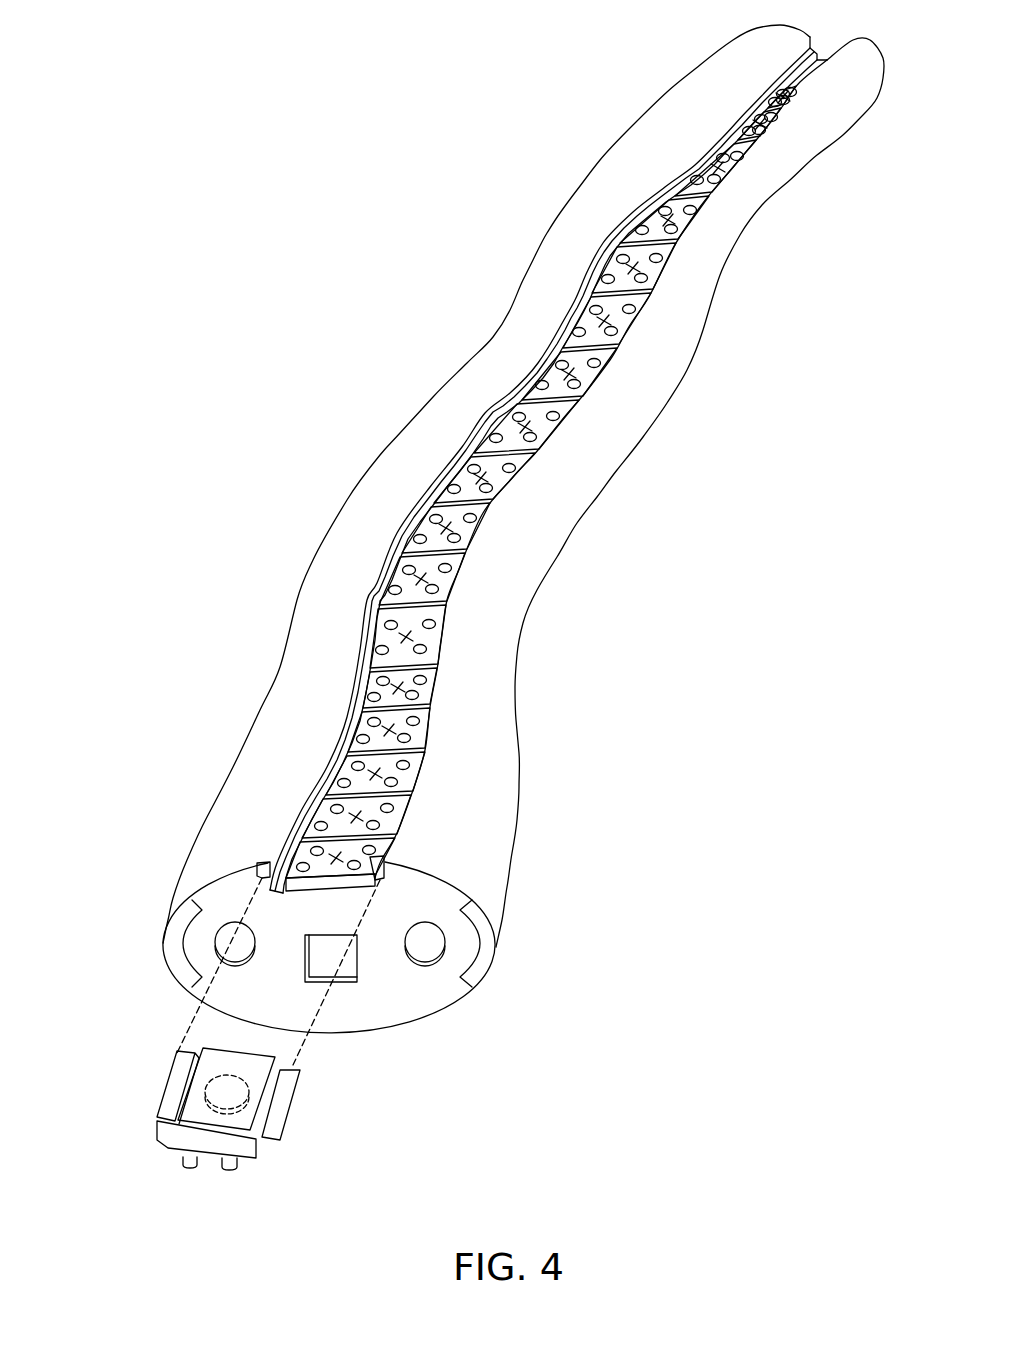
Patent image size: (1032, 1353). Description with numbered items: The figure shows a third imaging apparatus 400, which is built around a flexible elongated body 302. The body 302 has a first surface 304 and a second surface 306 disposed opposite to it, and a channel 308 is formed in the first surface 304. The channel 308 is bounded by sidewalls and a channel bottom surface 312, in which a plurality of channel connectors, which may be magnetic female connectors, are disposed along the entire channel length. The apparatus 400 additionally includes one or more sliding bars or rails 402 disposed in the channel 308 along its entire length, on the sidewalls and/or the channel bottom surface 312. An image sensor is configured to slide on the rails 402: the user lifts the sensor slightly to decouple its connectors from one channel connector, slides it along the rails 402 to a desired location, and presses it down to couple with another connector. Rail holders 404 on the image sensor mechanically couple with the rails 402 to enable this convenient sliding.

The third imaging apparatus 400 is at (245, 134).
The flexible elongated body 302 is at (258, 702).
The first surface 304 is at (263, 782).
The second surface 306 is at (393, 1027).
The channel 308 is at (313, 900).
The channel bottom surface 312 is at (400, 717).
The sliding bars or rails 402 is at (258, 867).
The rail holders 404 is at (157, 1120).